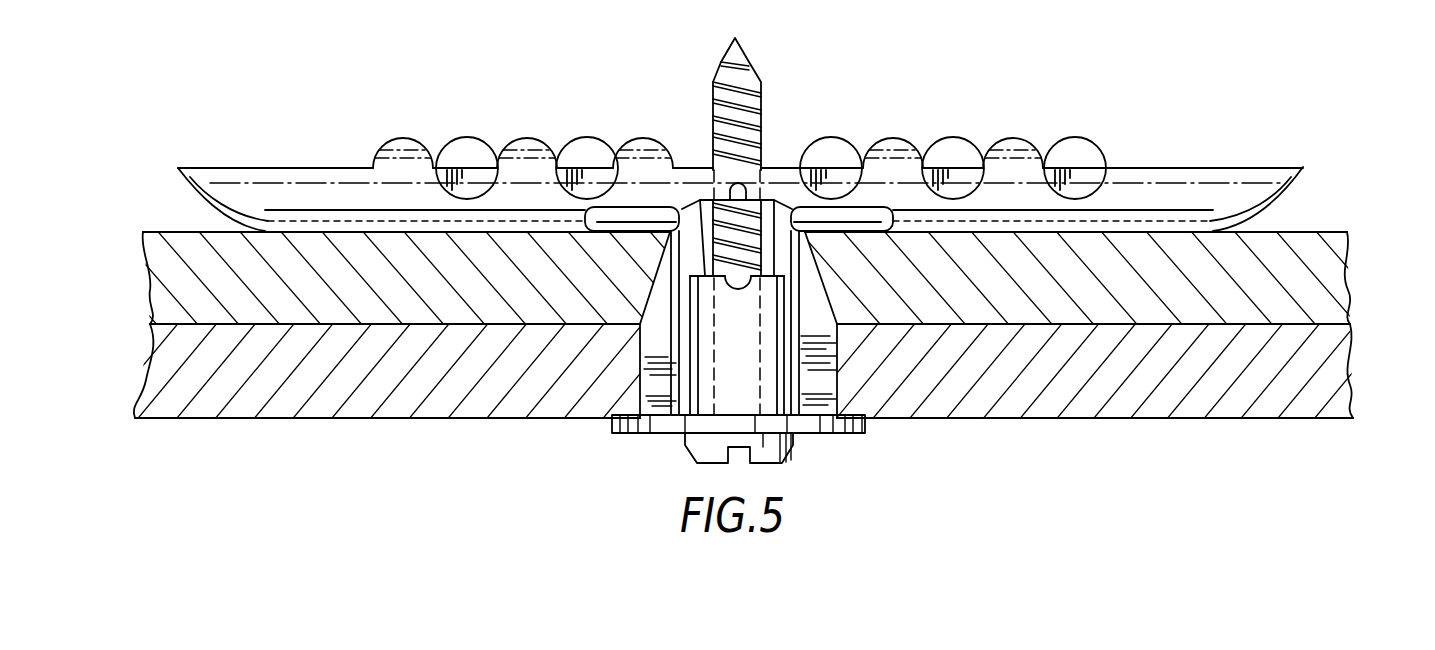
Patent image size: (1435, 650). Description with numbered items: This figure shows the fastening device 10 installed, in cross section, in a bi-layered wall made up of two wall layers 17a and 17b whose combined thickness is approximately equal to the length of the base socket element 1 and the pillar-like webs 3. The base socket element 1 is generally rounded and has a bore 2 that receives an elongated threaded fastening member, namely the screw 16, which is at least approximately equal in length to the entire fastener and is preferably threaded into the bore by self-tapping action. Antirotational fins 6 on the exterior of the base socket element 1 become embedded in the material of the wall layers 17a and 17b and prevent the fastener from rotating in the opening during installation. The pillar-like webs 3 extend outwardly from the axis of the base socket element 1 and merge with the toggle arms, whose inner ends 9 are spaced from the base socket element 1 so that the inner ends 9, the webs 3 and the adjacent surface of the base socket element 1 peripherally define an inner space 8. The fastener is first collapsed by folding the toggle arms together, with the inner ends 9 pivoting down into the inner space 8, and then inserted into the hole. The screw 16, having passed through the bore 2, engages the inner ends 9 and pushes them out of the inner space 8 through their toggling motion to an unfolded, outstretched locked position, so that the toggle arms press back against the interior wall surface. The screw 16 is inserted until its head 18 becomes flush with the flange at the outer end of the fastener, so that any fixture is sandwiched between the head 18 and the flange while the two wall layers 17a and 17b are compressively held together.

The fastening device 10 is at (556, 93).
The elongated fastening member 16 is at (748, 60).
The inner ends of the toggle arms 9 is at (770, 173).
The inner space 8 is at (777, 220).
The pillar-like webs 3 is at (870, 210).
The wall layer 17b is at (1312, 233).
The wall layer 17a is at (1323, 377).
The base socket element 1 is at (746, 340).
The antirotational fins 6 is at (826, 381).
The bore 2 is at (739, 298).
The head 18 is at (788, 460).